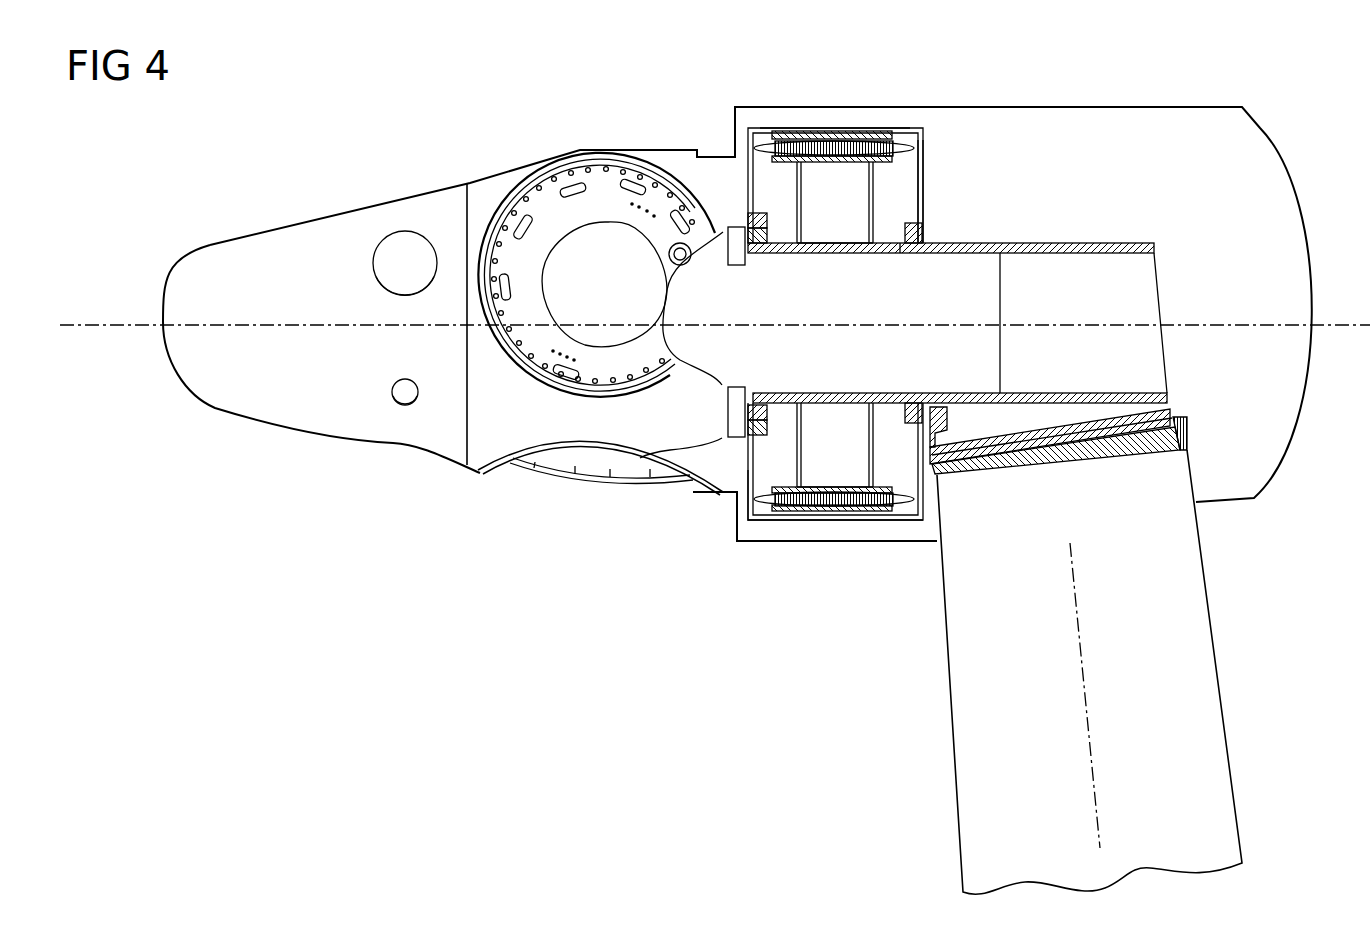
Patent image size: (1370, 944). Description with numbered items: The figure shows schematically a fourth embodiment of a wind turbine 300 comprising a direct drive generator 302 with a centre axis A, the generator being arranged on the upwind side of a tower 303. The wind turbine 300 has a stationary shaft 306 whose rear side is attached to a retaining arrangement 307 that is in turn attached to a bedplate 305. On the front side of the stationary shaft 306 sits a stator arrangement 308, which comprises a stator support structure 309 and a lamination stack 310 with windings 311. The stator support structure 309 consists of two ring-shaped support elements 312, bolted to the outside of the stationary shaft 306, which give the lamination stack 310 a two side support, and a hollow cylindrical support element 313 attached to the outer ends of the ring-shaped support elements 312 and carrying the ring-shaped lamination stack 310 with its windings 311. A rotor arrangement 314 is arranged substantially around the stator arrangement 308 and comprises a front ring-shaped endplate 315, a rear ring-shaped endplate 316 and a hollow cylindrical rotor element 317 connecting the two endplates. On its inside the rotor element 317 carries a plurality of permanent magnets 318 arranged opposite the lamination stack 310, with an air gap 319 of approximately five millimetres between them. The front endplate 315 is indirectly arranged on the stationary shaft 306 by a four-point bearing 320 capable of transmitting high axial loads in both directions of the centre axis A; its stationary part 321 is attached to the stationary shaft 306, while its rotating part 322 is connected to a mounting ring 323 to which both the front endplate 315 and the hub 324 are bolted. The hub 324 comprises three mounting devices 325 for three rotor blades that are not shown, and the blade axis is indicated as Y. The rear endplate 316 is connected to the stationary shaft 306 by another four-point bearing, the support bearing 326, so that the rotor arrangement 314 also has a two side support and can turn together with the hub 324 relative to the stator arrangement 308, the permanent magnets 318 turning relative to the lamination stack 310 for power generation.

The wind turbine 300 is at (1113, 76).
The direct drive generator 302 is at (823, 546).
The tower 303 is at (1205, 597).
The bedplate 305 is at (1025, 435).
The stationary shaft 306 is at (1110, 242).
The retaining arrangement 307 is at (973, 442).
The stator arrangement 308 is at (889, 194).
The stator support structure 309 is at (878, 215).
The lamination stack 310 is at (854, 511).
The windings 311 is at (905, 520).
The ring-shaped support elements 312 is at (873, 423).
The hollow cylindrical support element 313 is at (835, 486).
The rotor arrangement 314 is at (882, 128).
The front ring-shaped endplate 315 is at (742, 170).
The rear ring-shaped endplate 316 is at (928, 158).
The hollow cylindrical rotor element 317 is at (771, 128).
The permanent magnets 318 is at (828, 130).
The air gap 319 is at (751, 516).
The four-point bearing 320 is at (790, 251).
The stationary part 321 is at (755, 256).
The rotating part 322 is at (795, 223).
The mounting ring 323 is at (767, 213).
The hub 324 is at (497, 450).
The mounting devices 325 is at (553, 160).
The support bearing 326 is at (905, 255).
The centre axis A is at (1350, 318).
The blade axis Y is at (1073, 566).